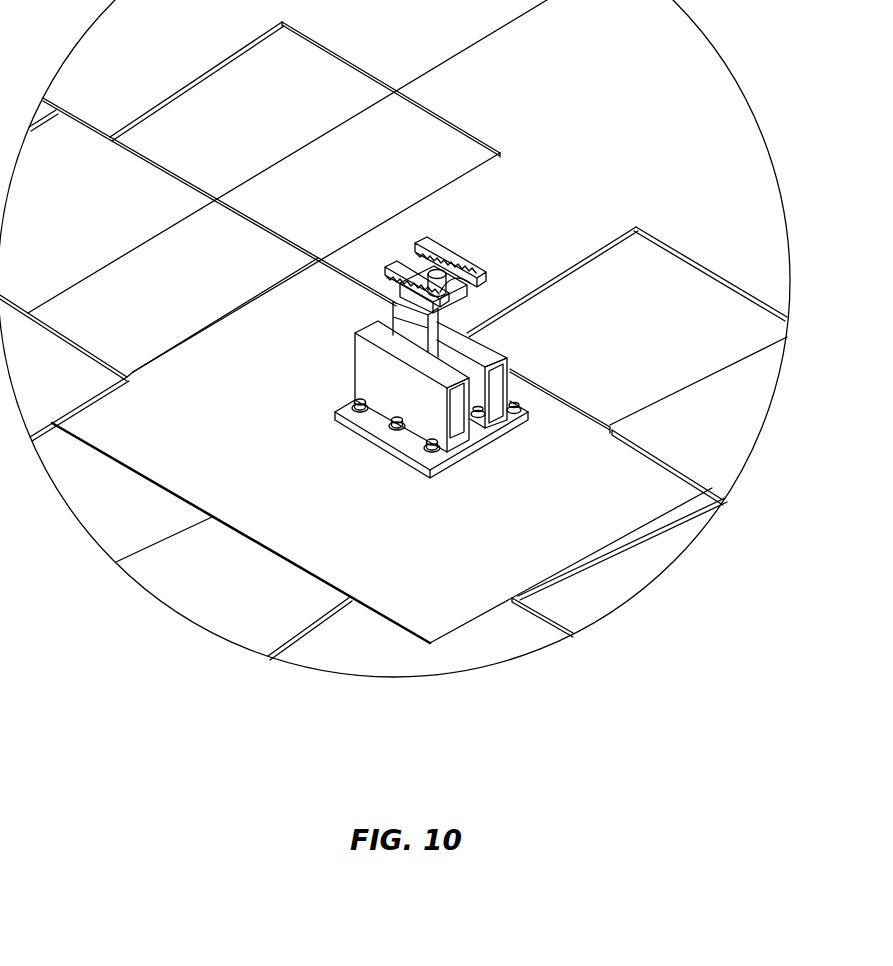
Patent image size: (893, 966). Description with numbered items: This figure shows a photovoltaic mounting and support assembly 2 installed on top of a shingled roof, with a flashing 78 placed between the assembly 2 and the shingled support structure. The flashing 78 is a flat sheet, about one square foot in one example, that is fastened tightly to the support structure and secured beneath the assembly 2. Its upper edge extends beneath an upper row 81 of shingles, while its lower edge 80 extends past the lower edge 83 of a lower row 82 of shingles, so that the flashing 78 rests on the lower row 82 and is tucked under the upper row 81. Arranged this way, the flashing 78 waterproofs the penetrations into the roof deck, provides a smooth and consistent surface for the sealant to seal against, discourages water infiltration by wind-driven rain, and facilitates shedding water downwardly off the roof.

The PV mounting and support assembly 2 is at (518, 242).
The flashing 78 is at (415, 537).
The lower edge of flashing 80 is at (250, 537).
The upper row of shingles 81 is at (762, 455).
The lower row of shingles 82 is at (692, 560).
The lower edge of lower row of shingles 83 is at (566, 640).